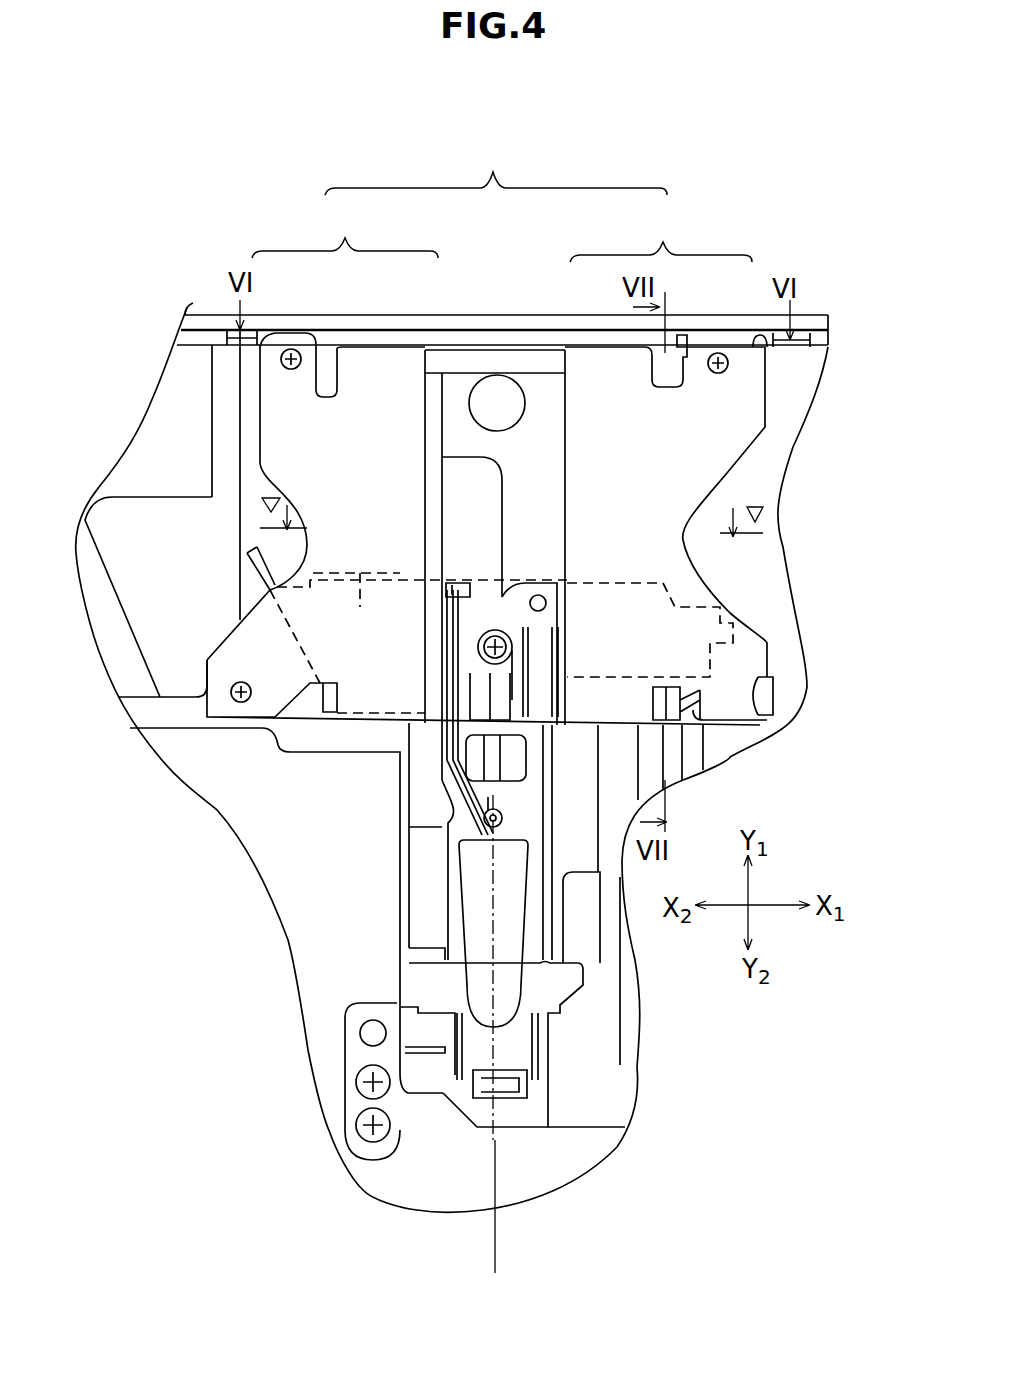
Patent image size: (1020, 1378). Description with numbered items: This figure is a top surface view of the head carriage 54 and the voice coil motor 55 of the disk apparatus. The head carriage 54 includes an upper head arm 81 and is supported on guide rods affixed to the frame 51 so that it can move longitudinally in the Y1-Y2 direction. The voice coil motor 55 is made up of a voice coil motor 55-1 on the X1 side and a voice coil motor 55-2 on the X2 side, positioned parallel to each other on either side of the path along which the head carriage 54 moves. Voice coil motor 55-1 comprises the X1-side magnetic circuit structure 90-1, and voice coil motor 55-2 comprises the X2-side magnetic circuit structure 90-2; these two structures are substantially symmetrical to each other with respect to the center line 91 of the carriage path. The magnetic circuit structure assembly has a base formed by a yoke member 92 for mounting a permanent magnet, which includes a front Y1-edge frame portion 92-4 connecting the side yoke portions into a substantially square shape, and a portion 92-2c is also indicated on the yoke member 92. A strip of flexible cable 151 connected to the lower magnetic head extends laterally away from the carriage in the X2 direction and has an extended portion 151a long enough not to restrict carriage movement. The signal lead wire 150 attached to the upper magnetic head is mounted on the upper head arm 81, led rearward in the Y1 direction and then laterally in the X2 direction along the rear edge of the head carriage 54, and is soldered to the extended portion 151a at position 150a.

The frame 51 is at (793, 345).
The head carriage 54 is at (440, 870).
The voice coil motor 55 is at (496, 163).
The voice coil motor 55-1 is at (738, 582).
The voice coil motor 55-2 is at (272, 551).
The upper head arm 81 is at (442, 828).
The X1-side magnetic circuit structure 90-1 is at (727, 490).
The X2-side magnetic circuit structure 90-2 is at (250, 418).
The center line 91 is at (497, 1233).
The yoke member 92 is at (560, 348).
The front Y1-edge frame portion 92-4 is at (457, 357).
The bracket side portion 92-2c is at (240, 667).
The signal lead wire 150 is at (445, 763).
The position 150a is at (270, 573).
The flexible cable 151 is at (478, 580).
The extended portion 151a is at (268, 548).